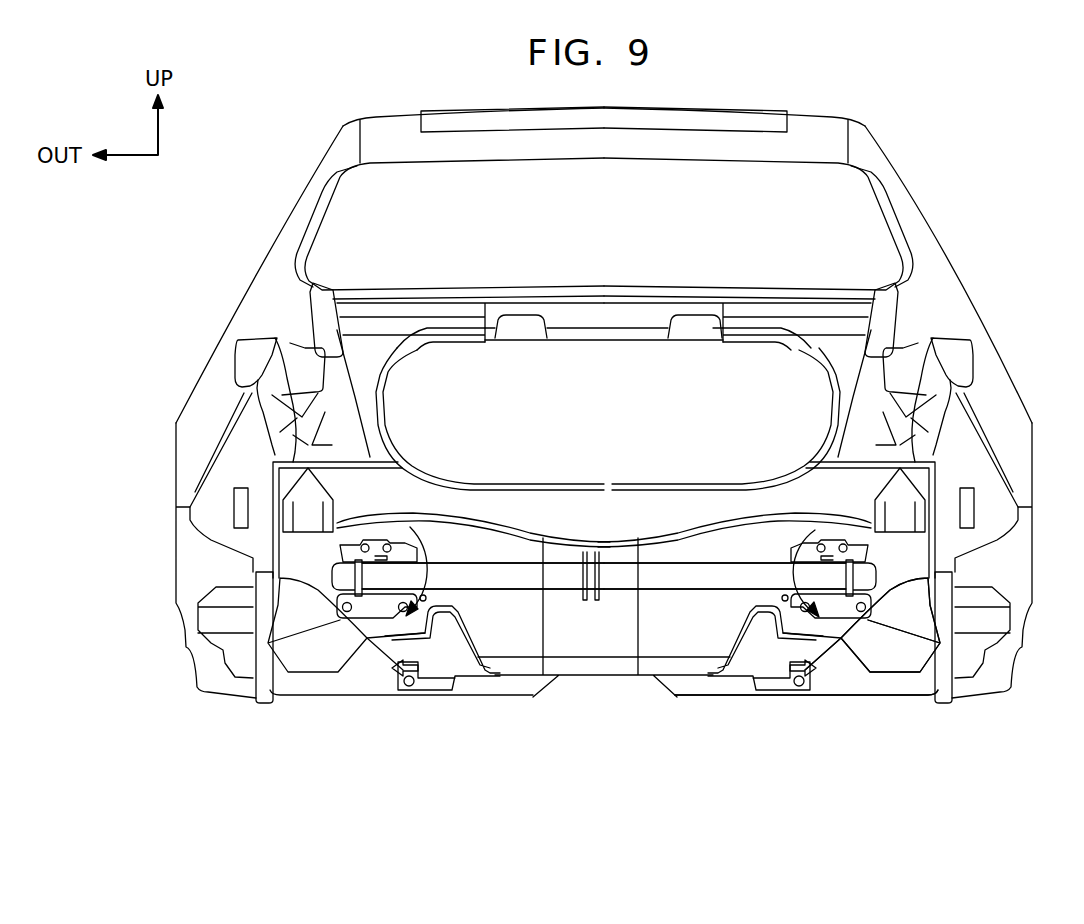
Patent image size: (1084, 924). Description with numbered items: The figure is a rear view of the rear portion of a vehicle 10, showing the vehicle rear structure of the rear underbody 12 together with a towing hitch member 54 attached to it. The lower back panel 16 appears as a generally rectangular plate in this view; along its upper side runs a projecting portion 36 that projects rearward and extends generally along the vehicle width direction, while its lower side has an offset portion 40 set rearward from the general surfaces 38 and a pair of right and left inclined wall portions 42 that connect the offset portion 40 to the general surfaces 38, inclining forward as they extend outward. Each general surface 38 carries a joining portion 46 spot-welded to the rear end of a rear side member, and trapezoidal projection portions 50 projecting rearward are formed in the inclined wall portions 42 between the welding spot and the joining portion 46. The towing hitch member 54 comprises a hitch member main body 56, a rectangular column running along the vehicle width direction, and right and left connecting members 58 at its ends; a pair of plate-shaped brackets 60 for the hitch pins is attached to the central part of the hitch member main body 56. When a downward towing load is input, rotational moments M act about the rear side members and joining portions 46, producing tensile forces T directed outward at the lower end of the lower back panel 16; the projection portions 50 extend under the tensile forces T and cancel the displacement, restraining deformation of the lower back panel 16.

The vehicle 10 is at (883, 114).
The rear underbody 12 is at (626, 638).
The lower back panel 16 is at (886, 600).
The projecting portion 36 is at (655, 512).
The general surfaces 38 is at (317, 578).
The offset portion 40 is at (593, 667).
The inclined wall portions 42 is at (482, 605).
The joining portion 46 is at (370, 608).
The projection portions 50 is at (457, 652).
The towing hitch member 54 is at (708, 562).
The hitch member main body 56 is at (515, 577).
The connecting members 58 is at (352, 577).
The plate-shaped brackets 60 is at (585, 600).
The rotational moments M is at (415, 533).
The tensile forces T is at (400, 690).